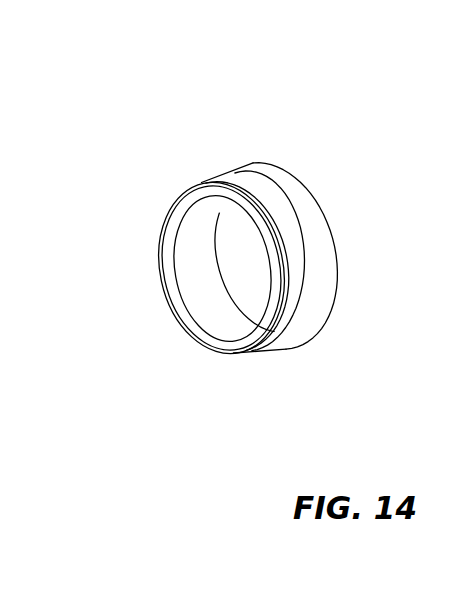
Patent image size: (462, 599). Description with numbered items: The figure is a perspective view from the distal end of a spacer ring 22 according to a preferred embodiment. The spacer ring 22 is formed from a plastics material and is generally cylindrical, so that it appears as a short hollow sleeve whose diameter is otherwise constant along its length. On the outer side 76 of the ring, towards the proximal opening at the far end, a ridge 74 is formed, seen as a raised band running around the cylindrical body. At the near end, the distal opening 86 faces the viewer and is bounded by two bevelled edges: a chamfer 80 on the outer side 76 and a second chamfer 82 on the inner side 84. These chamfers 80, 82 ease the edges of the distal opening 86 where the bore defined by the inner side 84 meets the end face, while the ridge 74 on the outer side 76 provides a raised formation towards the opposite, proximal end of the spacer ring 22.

The spacer ring 22 is at (252, 164).
The ridge 74 is at (317, 272).
The outer side 76 is at (278, 333).
The chamfer 80 is at (200, 182).
The chamfer 82 is at (233, 347).
The inner side 84 is at (210, 312).
The distal opening 86 is at (150, 275).